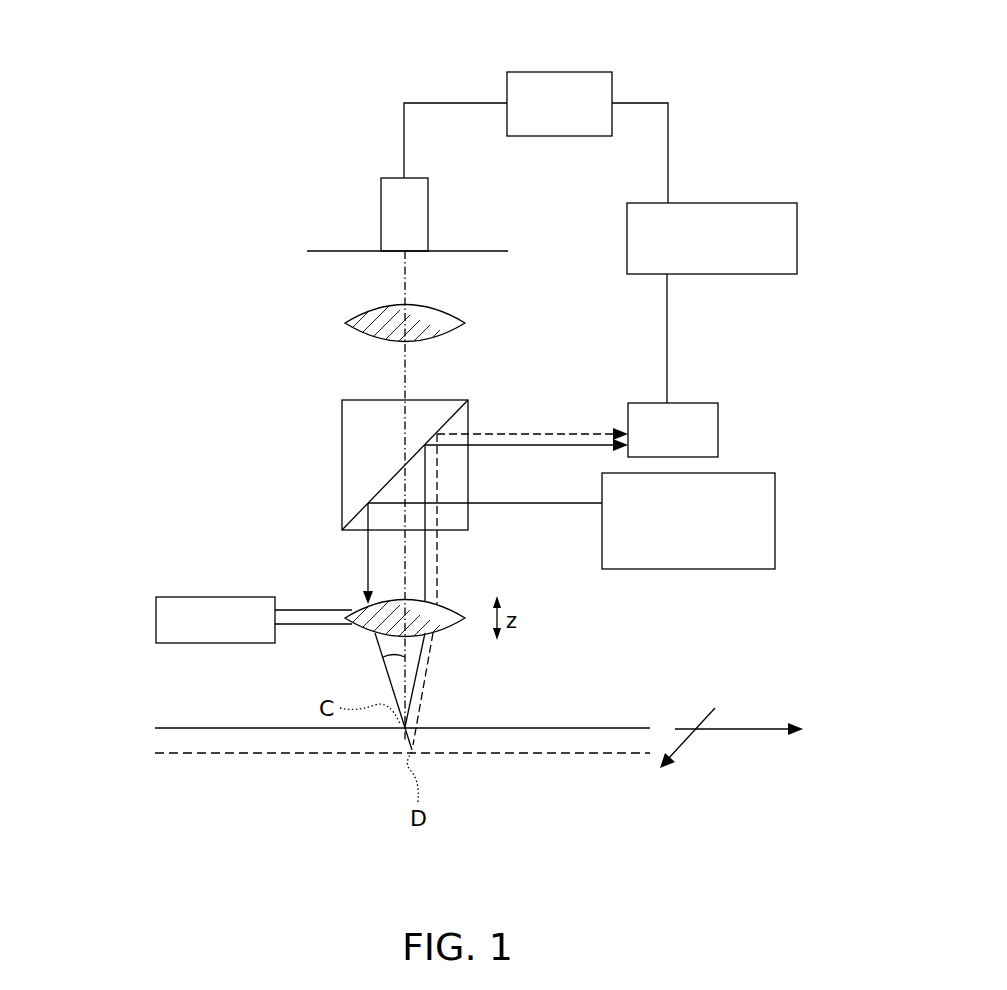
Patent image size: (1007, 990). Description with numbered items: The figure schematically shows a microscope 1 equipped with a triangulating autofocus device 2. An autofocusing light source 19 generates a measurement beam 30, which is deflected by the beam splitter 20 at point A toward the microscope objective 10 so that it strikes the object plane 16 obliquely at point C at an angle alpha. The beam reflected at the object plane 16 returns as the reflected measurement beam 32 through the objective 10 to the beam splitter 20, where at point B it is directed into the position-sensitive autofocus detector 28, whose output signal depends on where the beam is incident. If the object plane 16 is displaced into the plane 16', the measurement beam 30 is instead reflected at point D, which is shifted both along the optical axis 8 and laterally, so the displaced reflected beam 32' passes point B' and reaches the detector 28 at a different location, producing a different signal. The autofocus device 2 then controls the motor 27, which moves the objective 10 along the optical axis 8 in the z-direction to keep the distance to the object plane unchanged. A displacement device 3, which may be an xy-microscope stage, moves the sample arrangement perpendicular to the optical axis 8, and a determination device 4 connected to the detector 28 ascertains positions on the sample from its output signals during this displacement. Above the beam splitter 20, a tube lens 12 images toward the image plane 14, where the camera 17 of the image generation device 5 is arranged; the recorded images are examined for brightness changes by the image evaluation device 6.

The microscope 1 is at (200, 196).
The autofocus device 2 is at (178, 444).
The displacement device 3 is at (710, 772).
The determination device 4 is at (729, 203).
The image generation device 5 is at (340, 176).
The image evaluation device 6 is at (558, 72).
The optical axis 8 is at (405, 565).
The microscope objective 10 is at (365, 608).
The tube lens 12 is at (375, 310).
The image plane 14 is at (472, 251).
The object plane 16 is at (363, 725).
The displaced object plane 16' is at (402, 796).
The camera 17 is at (428, 212).
The autofocusing light source 19 is at (745, 473).
The beam splitter 20 is at (362, 448).
The motor 27 is at (214, 597).
The autofocus detector 28 is at (688, 403).
The measurement beam 30 is at (520, 504).
The reflected measurement beam 32 is at (526, 549).
The displaced reflected measurement beam 32' is at (520, 555).